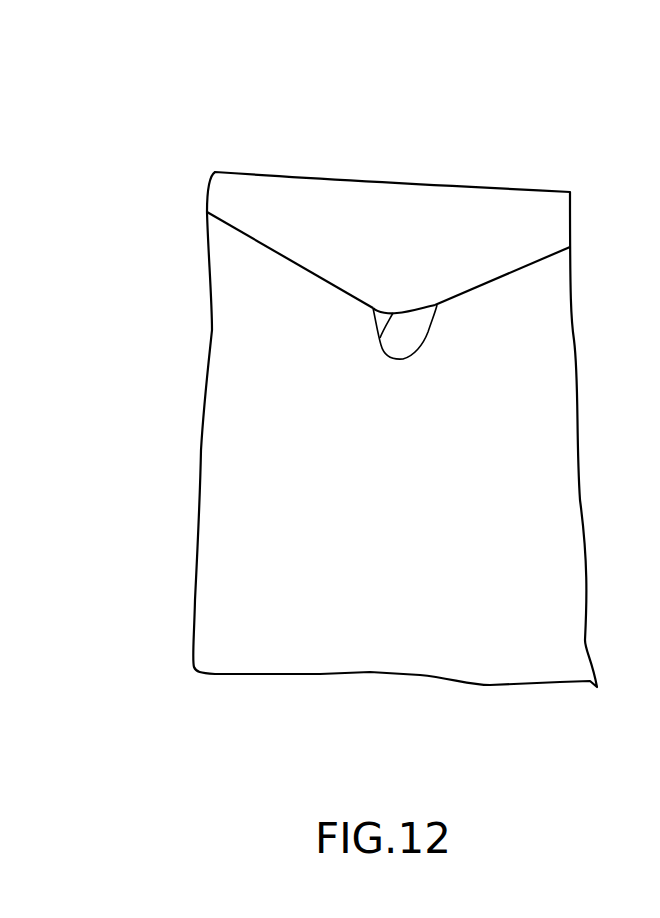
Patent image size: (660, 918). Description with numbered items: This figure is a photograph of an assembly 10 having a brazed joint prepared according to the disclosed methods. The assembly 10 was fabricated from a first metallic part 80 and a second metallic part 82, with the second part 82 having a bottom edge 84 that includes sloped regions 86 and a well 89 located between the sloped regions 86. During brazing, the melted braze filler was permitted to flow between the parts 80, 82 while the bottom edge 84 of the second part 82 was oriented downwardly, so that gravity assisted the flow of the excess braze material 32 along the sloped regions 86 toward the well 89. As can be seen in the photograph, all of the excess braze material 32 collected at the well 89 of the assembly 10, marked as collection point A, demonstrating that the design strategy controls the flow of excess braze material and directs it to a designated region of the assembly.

The assembly 10 is at (244, 128).
The first metallic part 80 is at (550, 363).
The second metallic part 82 is at (505, 208).
The bottom edge 84 is at (322, 282).
The sloped regions 86 is at (495, 276).
The well 89 is at (380, 338).
The excess braze material 32 is at (398, 345).